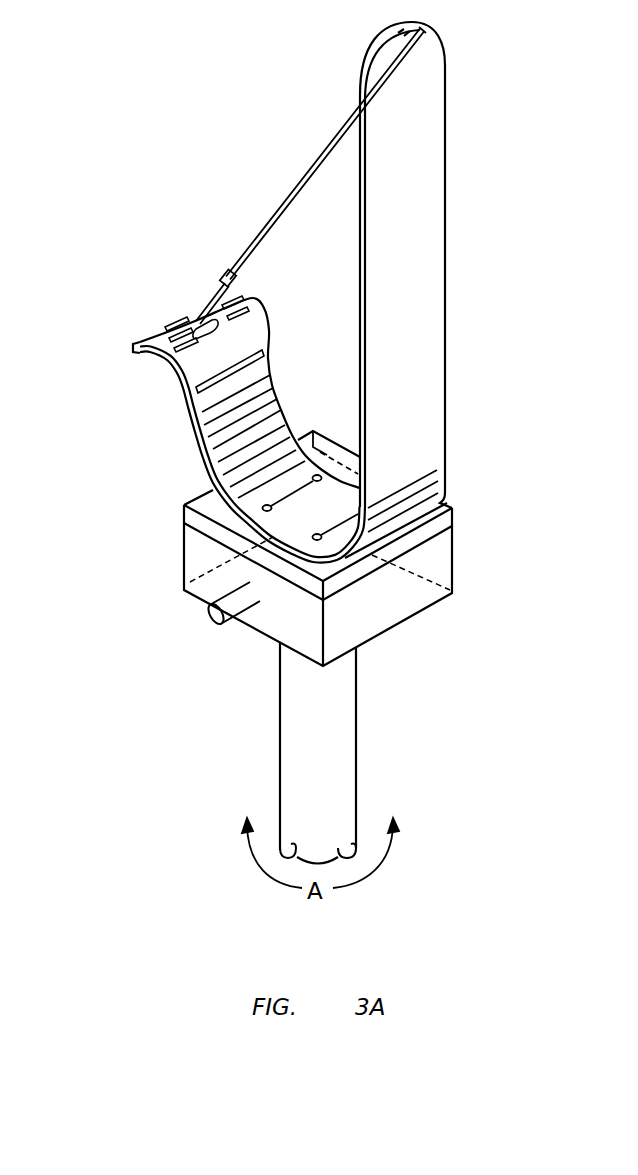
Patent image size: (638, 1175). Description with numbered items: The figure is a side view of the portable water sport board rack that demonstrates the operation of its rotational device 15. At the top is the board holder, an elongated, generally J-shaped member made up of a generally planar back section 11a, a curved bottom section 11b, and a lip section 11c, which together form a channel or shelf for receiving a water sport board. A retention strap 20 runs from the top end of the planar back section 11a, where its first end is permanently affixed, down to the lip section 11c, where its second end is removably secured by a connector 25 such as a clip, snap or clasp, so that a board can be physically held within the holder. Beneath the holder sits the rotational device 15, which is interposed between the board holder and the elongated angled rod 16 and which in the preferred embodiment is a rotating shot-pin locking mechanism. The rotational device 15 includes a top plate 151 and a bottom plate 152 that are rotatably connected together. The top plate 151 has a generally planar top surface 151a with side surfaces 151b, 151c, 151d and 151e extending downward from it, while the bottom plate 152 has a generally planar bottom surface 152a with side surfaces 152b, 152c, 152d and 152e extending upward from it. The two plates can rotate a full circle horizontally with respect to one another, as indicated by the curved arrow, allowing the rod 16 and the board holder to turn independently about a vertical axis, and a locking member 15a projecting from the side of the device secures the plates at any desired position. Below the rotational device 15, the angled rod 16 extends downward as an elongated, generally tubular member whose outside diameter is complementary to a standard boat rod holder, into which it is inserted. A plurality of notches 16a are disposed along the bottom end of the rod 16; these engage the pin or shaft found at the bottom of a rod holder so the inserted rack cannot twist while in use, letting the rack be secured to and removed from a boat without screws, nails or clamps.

The planar back section 11a is at (425, 238).
The curved bottom section 11b is at (333, 521).
The lip section 11c is at (133, 348).
The rotational device 15 is at (75, 495).
The locking member 15a is at (205, 626).
The top plate 151 is at (183, 508).
The top surface 151a is at (327, 450).
The side surface 151b is at (217, 533).
The side surface 151c is at (437, 570).
The side surface 151d is at (449, 506).
The side surface 151e is at (186, 503).
The bottom plate 152 is at (184, 548).
The bottom surface 152a is at (390, 630).
The side surface 152b is at (288, 618).
The side surface 152c is at (452, 590).
The side surface 152d is at (453, 550).
The side surface 152e is at (183, 576).
The angled rod 16 is at (338, 792).
The notches 16a is at (347, 850).
The retention strap 20 is at (285, 189).
The connector 25 is at (221, 269).